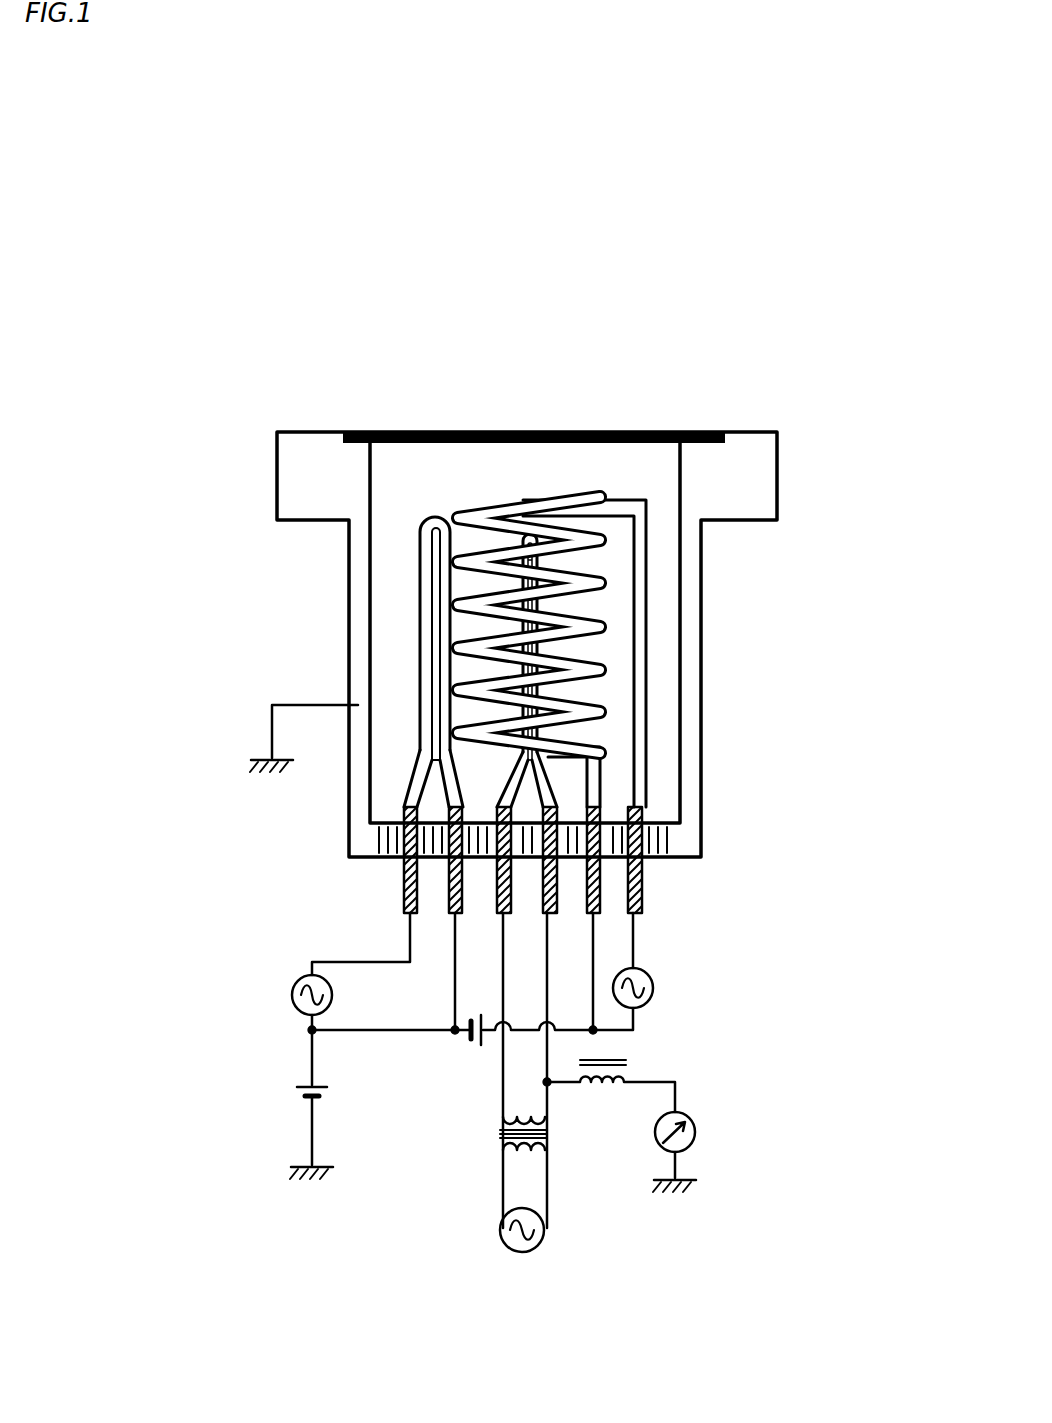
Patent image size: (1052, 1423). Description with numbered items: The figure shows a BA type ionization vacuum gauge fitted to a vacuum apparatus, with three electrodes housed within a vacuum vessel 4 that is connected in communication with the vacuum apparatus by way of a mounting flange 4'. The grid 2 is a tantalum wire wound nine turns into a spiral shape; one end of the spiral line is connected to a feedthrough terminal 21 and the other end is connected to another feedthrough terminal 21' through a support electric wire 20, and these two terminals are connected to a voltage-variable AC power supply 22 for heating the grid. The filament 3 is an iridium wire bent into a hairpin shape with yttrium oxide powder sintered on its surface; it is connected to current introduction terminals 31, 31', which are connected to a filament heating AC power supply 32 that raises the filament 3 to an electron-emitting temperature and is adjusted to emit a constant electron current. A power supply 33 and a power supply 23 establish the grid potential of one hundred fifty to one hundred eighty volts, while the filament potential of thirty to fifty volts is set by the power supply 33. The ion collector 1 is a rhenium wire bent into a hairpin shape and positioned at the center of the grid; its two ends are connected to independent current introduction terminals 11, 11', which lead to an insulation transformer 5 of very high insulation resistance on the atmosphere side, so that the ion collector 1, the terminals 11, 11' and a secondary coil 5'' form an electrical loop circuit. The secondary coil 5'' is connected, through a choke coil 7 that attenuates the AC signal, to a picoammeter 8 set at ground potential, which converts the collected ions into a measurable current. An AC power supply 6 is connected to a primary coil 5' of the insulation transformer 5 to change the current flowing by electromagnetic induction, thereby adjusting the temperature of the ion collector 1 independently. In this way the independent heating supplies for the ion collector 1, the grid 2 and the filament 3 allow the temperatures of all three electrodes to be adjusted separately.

The ion collector 1 is at (570, 550).
The grid 2 is at (500, 516).
The filament 3 is at (417, 620).
The vacuum vessel 4 is at (551, 644).
The mounting flange 4' is at (630, 601).
The support electric wire 20 is at (640, 662).
The feedthrough terminal 21 is at (702, 918).
The feedthrough terminal 21' is at (743, 887).
The current introduction terminal 31 is at (335, 891).
The current introduction terminal 31' is at (368, 918).
The current introduction terminal 11 is at (564, 1017).
The current introduction terminal 11' is at (486, 1017).
The filament heating AC power supply 32 is at (292, 990).
The power supply 33 is at (283, 1053).
The power supply 23 is at (465, 1048).
The voltage-variable AC power supply 22 is at (655, 990).
The choke coil 7 is at (625, 1058).
The picoammeter 8 is at (710, 1127).
The insulation transformer 5 is at (517, 1167).
The primary coil 5' is at (562, 1151).
The secondary coil 5'' is at (562, 1118).
The AC power supply 6 is at (553, 1242).